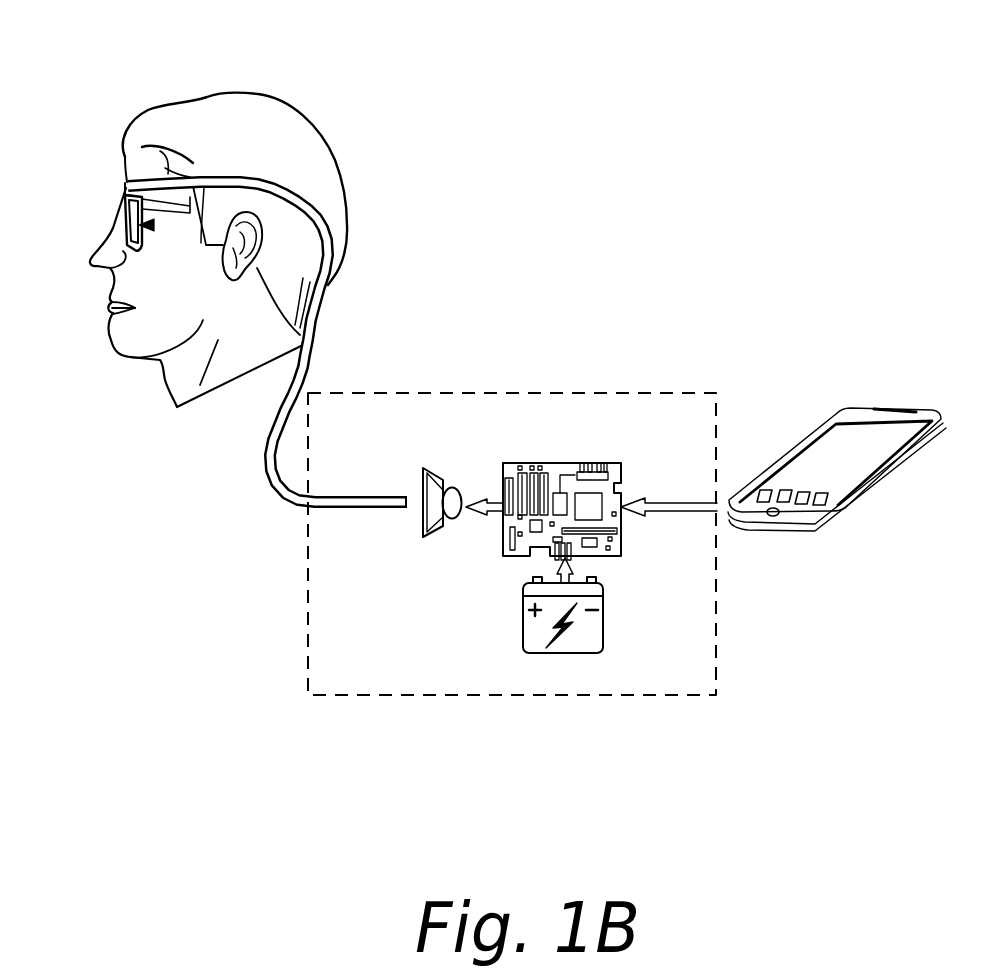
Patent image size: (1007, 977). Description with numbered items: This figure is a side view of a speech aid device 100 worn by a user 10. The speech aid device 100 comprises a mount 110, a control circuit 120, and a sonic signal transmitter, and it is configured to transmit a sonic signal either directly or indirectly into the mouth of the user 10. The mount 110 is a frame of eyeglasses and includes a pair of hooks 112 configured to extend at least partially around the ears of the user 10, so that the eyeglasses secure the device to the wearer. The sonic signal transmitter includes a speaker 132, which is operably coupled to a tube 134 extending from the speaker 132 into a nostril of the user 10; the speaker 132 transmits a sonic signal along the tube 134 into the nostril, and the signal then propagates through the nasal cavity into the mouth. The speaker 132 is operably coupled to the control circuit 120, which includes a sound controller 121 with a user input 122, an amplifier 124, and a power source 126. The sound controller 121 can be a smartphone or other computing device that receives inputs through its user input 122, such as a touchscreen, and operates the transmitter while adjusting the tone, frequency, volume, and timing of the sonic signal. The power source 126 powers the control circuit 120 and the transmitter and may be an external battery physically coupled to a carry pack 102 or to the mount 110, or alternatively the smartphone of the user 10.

The user 10 is at (224, 94).
The speech aid device 100 is at (553, 167).
The carry pack 102 is at (308, 580).
The mount 110 is at (125, 217).
The hooks 112 is at (126, 184).
The control circuit 120 is at (697, 362).
The sound controller 121 is at (867, 405).
The user input 122 is at (832, 438).
The amplifier 124 is at (620, 510).
The power source 126 is at (605, 628).
The speaker 132 is at (432, 466).
The tube 134 is at (265, 453).